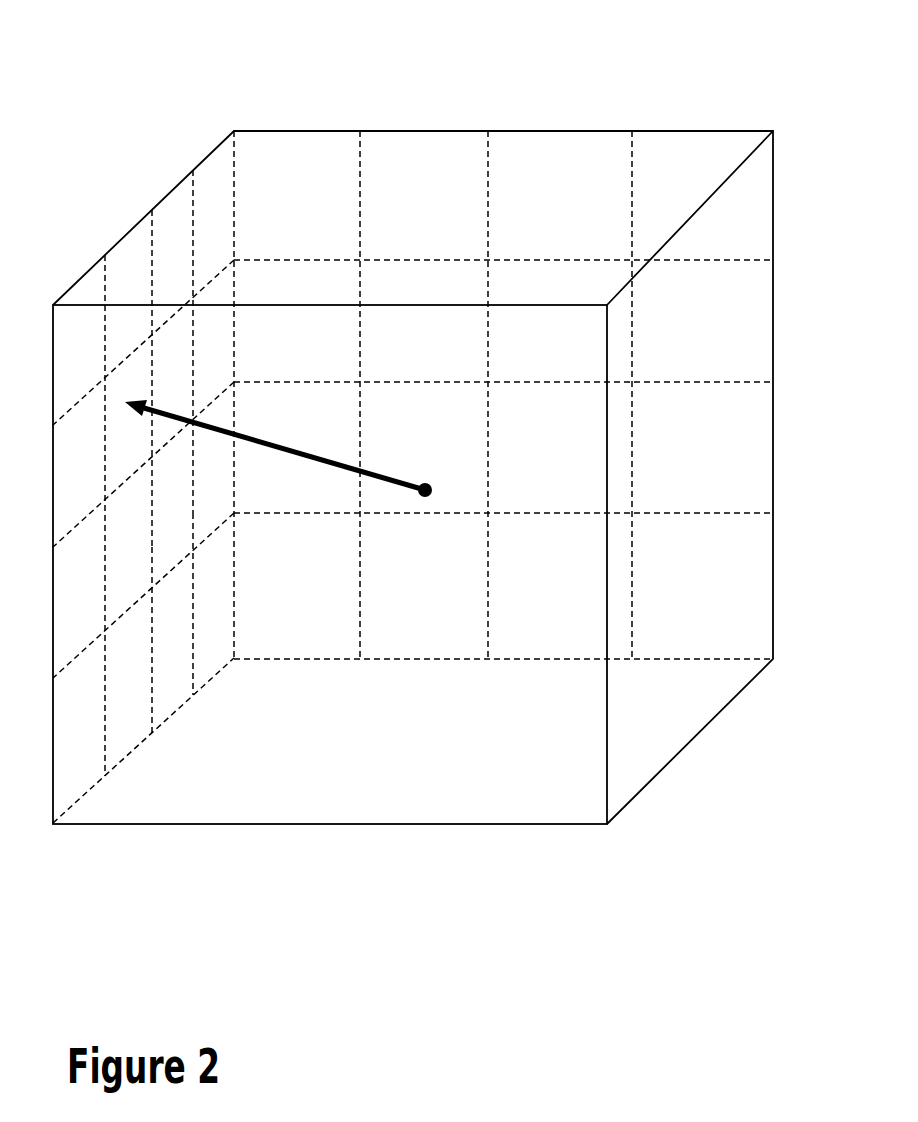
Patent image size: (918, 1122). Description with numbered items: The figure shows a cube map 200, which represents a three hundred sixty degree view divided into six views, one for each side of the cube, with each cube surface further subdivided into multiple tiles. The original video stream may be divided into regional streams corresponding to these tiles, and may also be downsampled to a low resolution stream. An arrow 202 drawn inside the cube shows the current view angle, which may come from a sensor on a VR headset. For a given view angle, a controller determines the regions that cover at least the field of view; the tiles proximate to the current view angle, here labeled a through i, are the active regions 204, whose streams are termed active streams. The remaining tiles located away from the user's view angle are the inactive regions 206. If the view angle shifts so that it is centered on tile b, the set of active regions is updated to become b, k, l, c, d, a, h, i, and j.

The cube map 200 is at (526, 70).
The arrow 202 is at (393, 477).
The active regions 204 is at (129, 399).
The inactive regions 206 is at (413, 453).